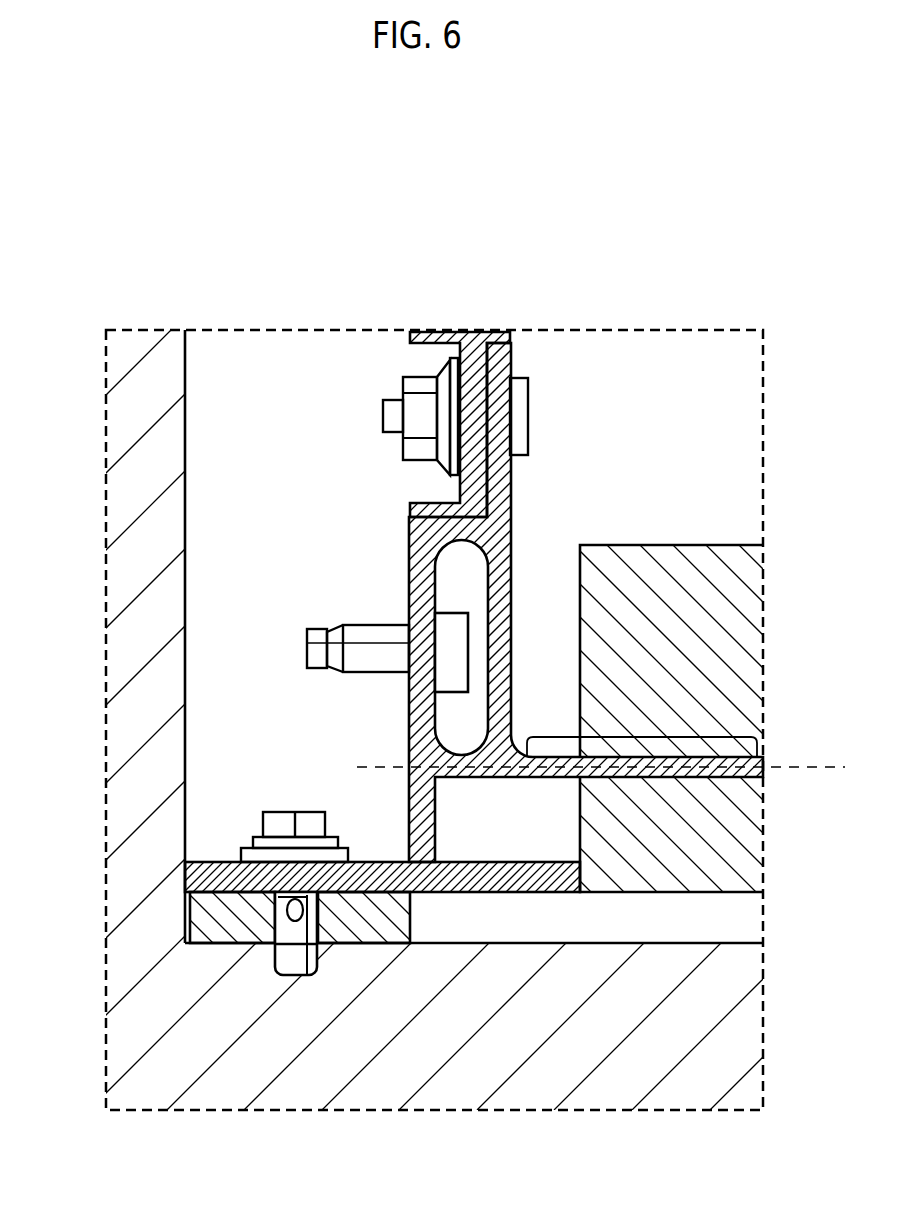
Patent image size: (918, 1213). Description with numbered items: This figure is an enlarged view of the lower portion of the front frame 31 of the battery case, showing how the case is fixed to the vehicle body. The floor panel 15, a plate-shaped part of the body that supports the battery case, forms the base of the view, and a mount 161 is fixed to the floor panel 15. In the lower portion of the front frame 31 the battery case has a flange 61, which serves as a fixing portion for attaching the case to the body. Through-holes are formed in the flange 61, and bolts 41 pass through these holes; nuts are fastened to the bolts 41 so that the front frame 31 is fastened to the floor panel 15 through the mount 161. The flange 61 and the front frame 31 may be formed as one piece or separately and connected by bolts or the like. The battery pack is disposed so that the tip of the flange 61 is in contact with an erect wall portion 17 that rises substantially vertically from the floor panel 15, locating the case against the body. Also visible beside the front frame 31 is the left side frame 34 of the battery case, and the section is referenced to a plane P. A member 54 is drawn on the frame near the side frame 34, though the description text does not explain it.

The floor panel 15 is at (600, 1083).
The erect wall portion 17 is at (125, 508).
The front frame 31 is at (486, 358).
The side frame (left side frame) 34 is at (750, 592).
The bolt 41 is at (314, 822).
The seal member 54 is at (640, 736).
The flange 61 is at (220, 873).
The mount 161 is at (228, 913).
The reference plane P is at (825, 767).